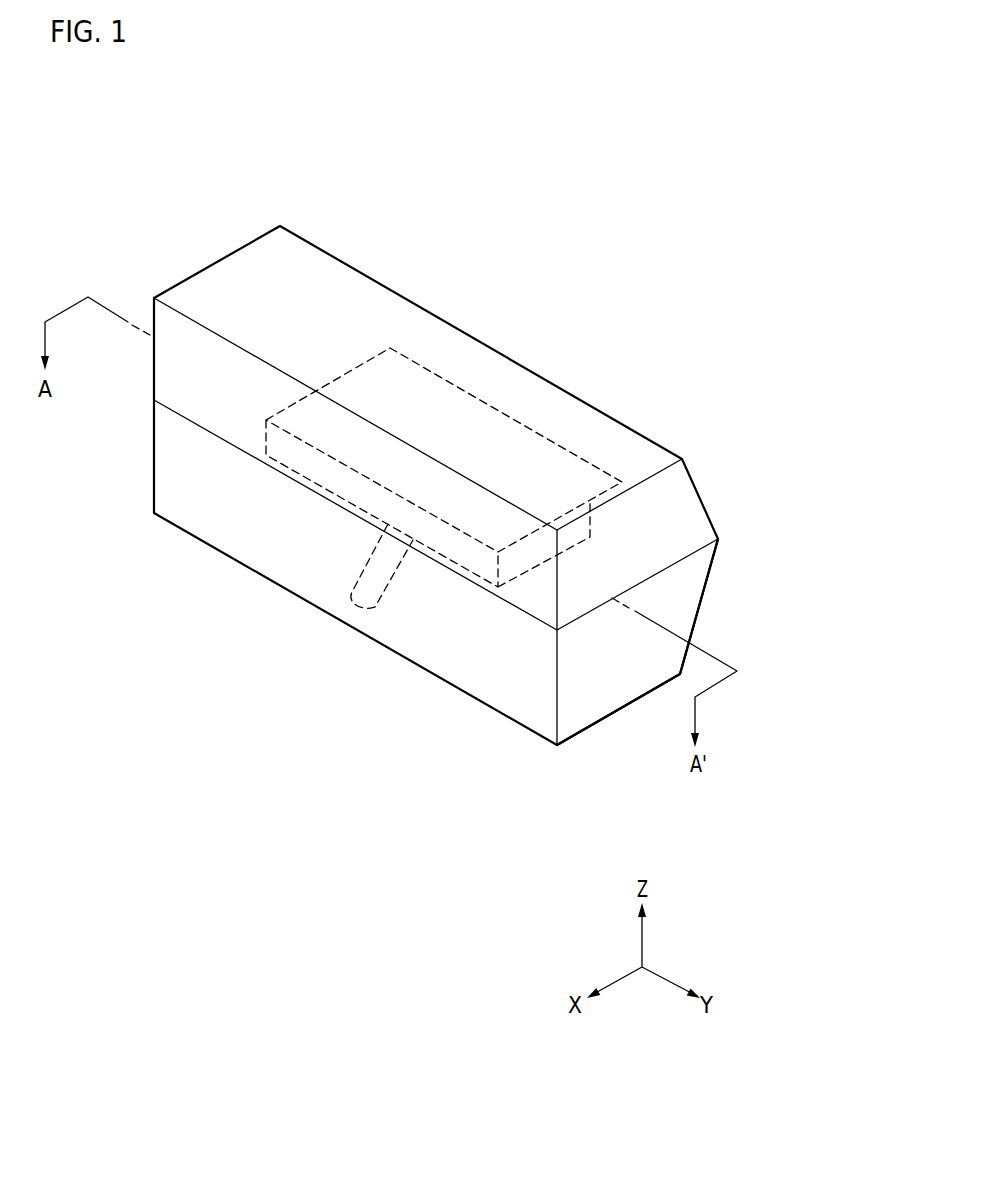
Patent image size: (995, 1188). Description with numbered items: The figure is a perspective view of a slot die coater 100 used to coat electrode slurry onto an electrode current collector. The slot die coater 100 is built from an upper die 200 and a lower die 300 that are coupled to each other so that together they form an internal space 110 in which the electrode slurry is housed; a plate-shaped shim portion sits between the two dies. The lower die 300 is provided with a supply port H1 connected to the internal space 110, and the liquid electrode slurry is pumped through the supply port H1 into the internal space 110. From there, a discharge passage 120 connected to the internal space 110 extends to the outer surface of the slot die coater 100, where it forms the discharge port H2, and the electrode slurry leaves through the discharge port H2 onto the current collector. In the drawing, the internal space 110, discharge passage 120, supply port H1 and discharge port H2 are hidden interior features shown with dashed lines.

The slot die coater 100 is at (448, 453).
The internal space 110 is at (340, 476).
The discharge passage 120 is at (418, 414).
The upper die 200 is at (697, 505).
The lower die 300 is at (695, 592).
The supply port H1 is at (360, 603).
The discharge port H2 is at (488, 403).